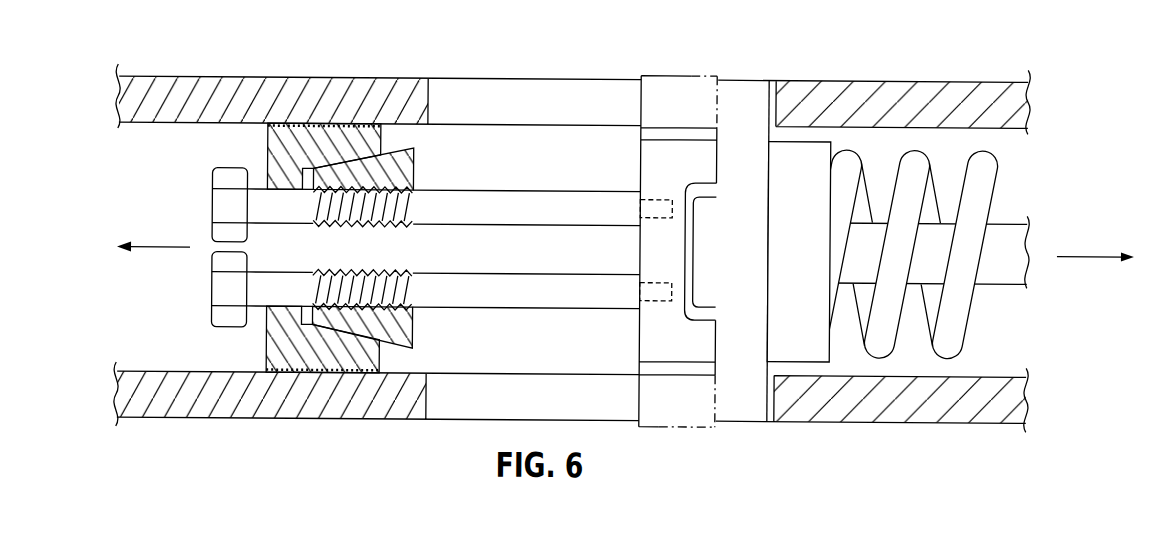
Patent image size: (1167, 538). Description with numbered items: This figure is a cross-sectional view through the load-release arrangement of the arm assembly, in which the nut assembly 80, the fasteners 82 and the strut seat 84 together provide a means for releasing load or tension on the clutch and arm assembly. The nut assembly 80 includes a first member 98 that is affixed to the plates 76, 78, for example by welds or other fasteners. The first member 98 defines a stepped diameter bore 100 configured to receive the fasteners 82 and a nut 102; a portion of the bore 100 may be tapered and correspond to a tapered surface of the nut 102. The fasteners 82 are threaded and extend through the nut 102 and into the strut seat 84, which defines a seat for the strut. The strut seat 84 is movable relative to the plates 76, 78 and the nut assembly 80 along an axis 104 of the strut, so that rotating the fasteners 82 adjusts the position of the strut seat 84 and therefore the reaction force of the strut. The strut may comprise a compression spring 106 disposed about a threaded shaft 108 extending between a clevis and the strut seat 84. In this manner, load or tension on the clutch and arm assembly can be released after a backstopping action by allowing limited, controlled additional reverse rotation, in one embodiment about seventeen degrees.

The plate 76 is at (223, 390).
The plate 78 is at (295, 102).
The nut assembly 80 is at (341, 352).
The fasteners 82 is at (553, 289).
The strut seat 84 is at (682, 346).
The first member 98 is at (355, 136).
The stepped diameter bore 100 is at (340, 337).
The nut 102 is at (397, 326).
The axis 104 is at (1093, 253).
The compression spring 106 is at (987, 184).
The threaded shaft 108 is at (1003, 264).